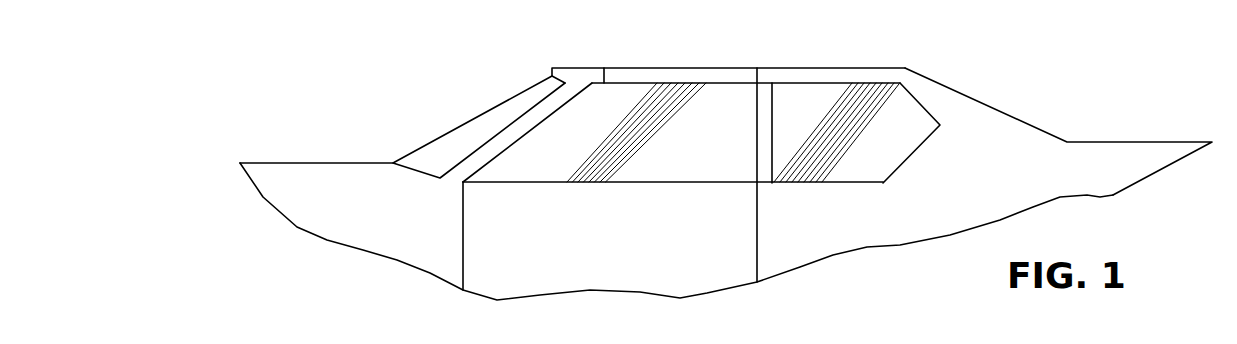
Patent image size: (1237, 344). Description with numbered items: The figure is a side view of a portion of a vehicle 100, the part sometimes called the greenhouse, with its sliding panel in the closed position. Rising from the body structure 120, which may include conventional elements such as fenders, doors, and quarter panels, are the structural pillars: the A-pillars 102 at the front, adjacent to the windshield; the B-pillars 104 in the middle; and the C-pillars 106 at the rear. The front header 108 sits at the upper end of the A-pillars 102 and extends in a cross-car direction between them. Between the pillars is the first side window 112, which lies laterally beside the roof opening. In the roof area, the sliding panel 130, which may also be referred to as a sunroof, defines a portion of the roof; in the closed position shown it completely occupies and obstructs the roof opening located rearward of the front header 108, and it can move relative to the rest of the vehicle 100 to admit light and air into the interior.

The vehicle 100 is at (322, 116).
The A-pillars 102 is at (497, 144).
The B-pillars 104 is at (765, 102).
The C-pillars 106 is at (953, 115).
The front header 108 is at (582, 73).
The first side window 112 is at (705, 157).
The body structure 120 is at (848, 233).
The sliding panel 130 is at (668, 75).